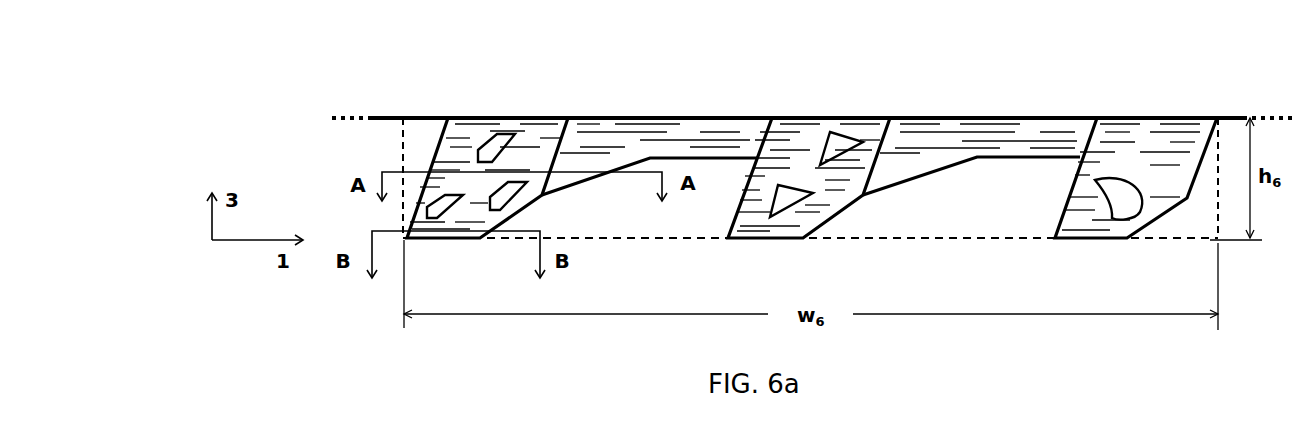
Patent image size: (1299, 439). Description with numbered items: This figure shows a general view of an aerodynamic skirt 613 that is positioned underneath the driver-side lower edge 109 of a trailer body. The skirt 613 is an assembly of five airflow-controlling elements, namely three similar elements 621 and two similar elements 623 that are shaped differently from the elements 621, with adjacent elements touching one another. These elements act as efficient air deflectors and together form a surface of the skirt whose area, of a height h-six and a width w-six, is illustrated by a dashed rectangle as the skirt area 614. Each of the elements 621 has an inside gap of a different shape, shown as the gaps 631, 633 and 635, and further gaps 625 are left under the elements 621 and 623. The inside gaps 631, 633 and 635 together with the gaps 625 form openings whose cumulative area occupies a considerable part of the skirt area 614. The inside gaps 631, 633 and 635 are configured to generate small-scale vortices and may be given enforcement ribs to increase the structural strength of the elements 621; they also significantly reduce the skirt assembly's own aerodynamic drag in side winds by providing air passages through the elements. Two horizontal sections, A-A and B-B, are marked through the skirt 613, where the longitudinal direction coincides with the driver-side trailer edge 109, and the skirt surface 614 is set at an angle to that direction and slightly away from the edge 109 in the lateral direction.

The driver-side lower edge 109 is at (382, 116).
The aerodynamic skirt 613 is at (308, 140).
The skirt area 614 is at (1003, 242).
The airflow-controlling elements 621 is at (467, 135).
The airflow-controlling elements 623 is at (700, 133).
The gaps 625 is at (952, 205).
The gap 631 is at (507, 125).
The gap 633 is at (853, 127).
The gap 635 is at (1128, 183).